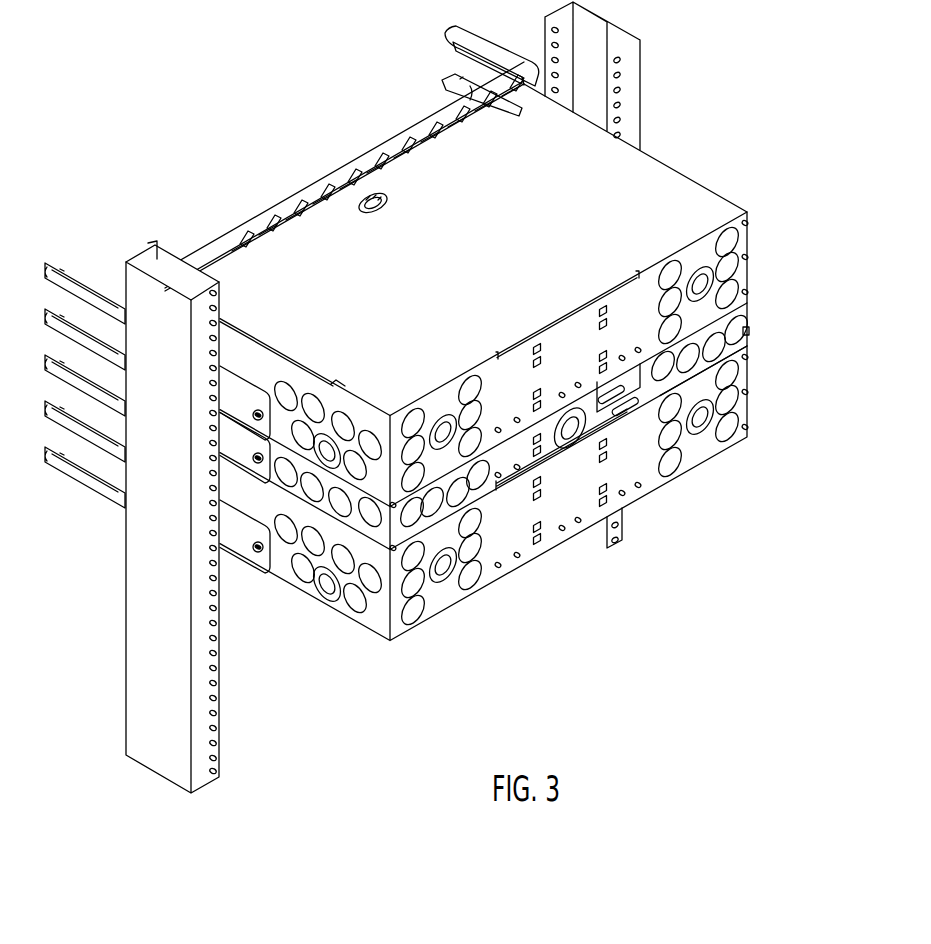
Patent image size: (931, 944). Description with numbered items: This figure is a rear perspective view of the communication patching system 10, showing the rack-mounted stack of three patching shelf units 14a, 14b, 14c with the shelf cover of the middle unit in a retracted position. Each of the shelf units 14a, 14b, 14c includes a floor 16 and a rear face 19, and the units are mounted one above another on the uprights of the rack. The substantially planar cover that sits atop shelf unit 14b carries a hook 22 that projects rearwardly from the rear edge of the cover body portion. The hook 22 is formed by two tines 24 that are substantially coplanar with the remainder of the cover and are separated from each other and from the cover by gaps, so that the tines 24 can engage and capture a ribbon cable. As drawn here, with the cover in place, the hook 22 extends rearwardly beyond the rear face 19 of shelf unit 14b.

The communication patching system 10 is at (762, 160).
The patching shelf unit 14a is at (763, 258).
The patching shelf unit 14b is at (767, 310).
The patching shelf unit 14c is at (768, 415).
The floor 16 is at (703, 381).
The rear face 19 is at (751, 358).
The hook 22 is at (650, 402).
The tines 24 is at (612, 423).